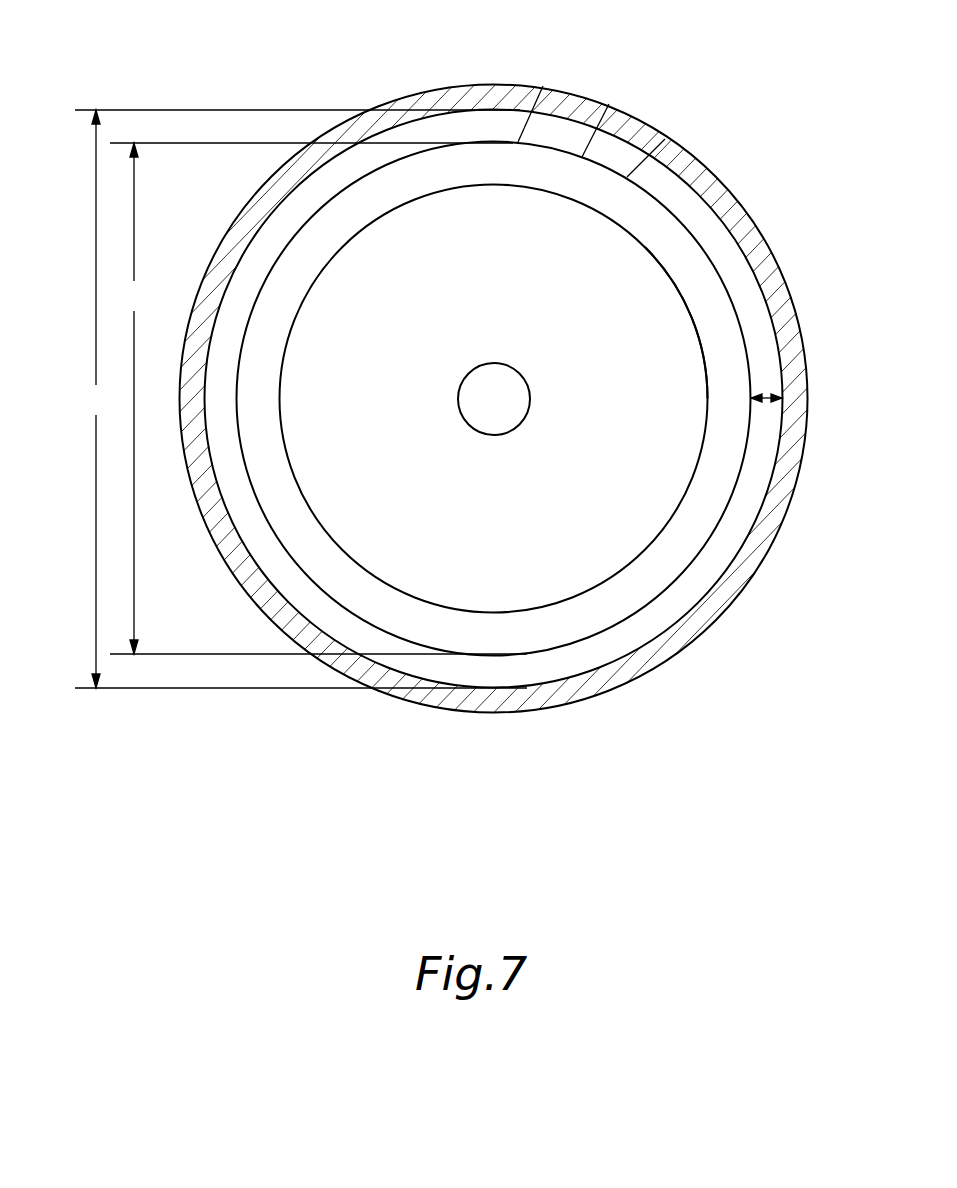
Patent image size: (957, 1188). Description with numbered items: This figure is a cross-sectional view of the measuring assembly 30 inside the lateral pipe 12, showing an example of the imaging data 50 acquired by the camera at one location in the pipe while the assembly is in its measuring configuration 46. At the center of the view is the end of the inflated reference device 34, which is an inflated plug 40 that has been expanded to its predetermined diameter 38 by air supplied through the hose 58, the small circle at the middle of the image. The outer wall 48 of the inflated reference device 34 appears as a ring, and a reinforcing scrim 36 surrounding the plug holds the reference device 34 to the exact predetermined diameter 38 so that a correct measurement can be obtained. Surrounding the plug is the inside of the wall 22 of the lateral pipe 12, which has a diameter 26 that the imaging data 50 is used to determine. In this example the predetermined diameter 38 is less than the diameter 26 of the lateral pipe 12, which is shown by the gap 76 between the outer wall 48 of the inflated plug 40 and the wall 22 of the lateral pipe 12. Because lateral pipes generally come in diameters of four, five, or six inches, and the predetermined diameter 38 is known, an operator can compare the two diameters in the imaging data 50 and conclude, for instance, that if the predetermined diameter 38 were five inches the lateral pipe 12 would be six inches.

The imaging data 50 is at (722, 56).
The lateral pipe 12 is at (273, 178).
The wall 22 is at (245, 226).
The predetermined diameter 38 is at (142, 282).
The diameter 26 is at (94, 386).
The inflated plug 40 is at (538, 88).
The measuring configuration 46 is at (612, 116).
The outer wall 48 is at (662, 140).
The measuring assembly 30 is at (658, 257).
The reference device 34 is at (650, 603).
The reinforcing scrim 36 is at (688, 535).
The hose 58 is at (517, 391).
The gap 76 is at (768, 393).